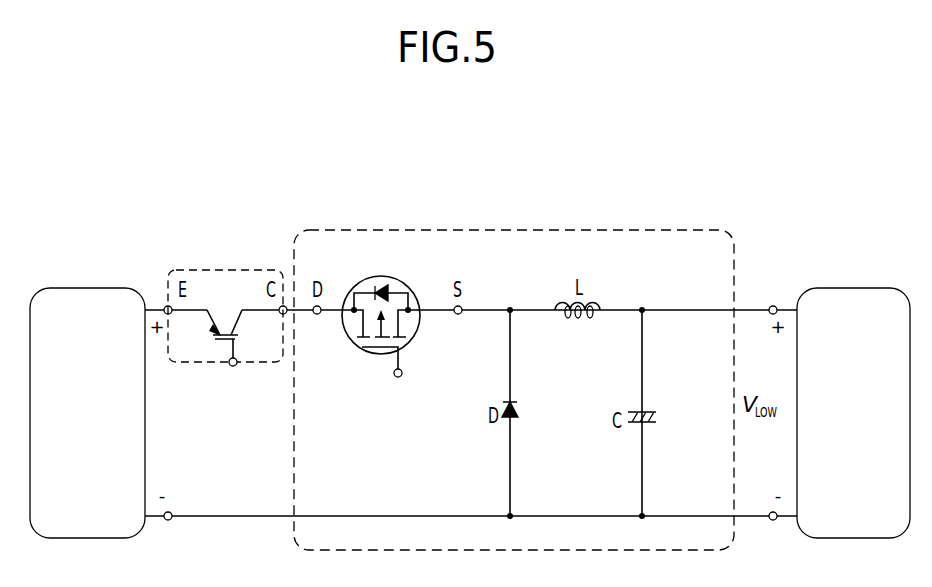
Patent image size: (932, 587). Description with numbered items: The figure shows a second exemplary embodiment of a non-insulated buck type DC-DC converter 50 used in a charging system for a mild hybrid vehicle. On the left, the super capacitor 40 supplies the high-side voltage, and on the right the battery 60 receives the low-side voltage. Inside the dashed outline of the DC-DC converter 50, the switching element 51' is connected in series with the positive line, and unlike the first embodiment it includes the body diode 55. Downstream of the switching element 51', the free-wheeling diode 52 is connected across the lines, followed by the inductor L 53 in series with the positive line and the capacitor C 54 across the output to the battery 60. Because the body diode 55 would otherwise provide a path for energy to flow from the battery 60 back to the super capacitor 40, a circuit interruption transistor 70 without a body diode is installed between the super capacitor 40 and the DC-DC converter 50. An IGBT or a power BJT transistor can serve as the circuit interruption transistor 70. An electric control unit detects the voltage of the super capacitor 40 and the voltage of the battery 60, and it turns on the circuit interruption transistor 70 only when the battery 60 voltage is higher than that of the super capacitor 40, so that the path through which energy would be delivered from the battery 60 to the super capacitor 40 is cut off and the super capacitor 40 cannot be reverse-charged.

The super capacitor 40 is at (91, 288).
The circuit interruption transistor 70 is at (237, 268).
The DC-DC converter 50 is at (533, 230).
The switching element 51' is at (381, 309).
The body diode 55 is at (392, 292).
The free-wheeling diode 52 is at (514, 400).
The inductor L 53 is at (601, 295).
The capacitor C 54 is at (646, 412).
The battery 60 is at (854, 288).